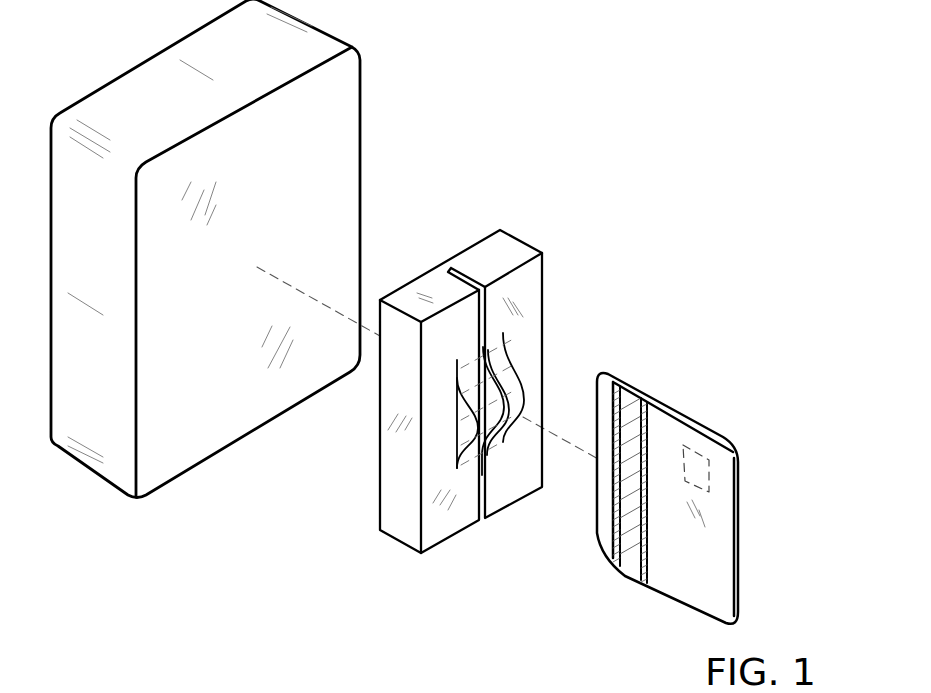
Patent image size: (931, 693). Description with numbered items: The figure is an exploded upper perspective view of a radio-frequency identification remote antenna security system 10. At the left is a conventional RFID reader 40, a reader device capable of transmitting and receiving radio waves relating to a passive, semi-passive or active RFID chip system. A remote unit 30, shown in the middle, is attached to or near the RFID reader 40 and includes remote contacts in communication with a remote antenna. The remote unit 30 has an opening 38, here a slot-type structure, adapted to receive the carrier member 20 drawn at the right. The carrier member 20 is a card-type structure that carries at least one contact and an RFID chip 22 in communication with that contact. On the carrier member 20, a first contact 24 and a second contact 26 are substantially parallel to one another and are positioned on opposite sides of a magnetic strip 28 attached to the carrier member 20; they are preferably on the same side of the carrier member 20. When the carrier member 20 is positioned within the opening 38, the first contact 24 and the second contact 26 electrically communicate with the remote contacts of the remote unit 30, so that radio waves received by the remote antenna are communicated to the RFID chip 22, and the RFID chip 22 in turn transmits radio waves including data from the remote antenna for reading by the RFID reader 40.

The radio-frequency identification remote antenna security system 10 is at (683, 152).
The carrier member 20 is at (690, 408).
The RFID chip 22 is at (708, 484).
The first contact 24 is at (620, 531).
The second contact 26 is at (642, 575).
The magnetic strip 28 is at (630, 557).
The remote unit 30 is at (543, 299).
The opening 38 is at (471, 284).
The RFID reader 40 is at (362, 114).